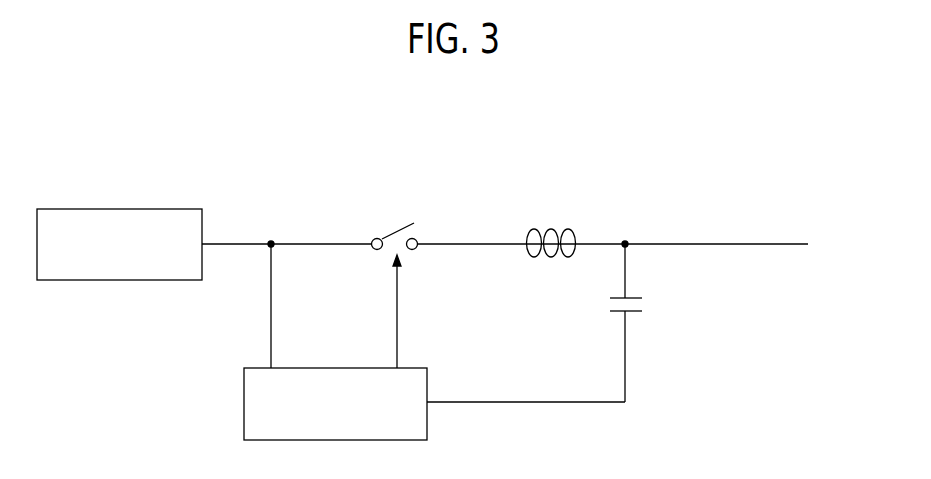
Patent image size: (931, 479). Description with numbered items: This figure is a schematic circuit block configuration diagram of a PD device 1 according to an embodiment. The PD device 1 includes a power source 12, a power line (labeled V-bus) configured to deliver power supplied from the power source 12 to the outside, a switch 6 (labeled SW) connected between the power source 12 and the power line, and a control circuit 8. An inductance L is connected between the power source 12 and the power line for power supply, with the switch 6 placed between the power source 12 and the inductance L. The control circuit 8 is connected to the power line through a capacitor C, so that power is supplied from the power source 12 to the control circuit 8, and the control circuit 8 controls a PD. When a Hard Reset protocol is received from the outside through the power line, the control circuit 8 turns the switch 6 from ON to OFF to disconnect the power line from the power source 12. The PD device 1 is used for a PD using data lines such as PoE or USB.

The PD device 1 is at (590, 163).
The switch 6 is at (415, 210).
The control circuit 8 is at (340, 366).
The power source 12 is at (118, 208).